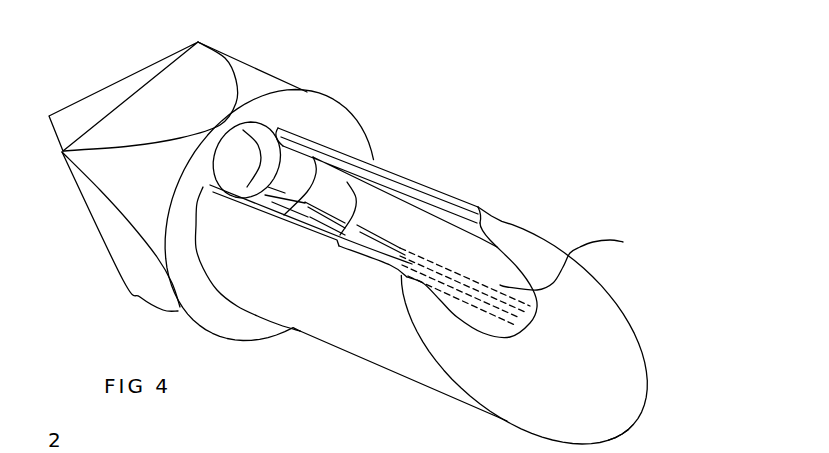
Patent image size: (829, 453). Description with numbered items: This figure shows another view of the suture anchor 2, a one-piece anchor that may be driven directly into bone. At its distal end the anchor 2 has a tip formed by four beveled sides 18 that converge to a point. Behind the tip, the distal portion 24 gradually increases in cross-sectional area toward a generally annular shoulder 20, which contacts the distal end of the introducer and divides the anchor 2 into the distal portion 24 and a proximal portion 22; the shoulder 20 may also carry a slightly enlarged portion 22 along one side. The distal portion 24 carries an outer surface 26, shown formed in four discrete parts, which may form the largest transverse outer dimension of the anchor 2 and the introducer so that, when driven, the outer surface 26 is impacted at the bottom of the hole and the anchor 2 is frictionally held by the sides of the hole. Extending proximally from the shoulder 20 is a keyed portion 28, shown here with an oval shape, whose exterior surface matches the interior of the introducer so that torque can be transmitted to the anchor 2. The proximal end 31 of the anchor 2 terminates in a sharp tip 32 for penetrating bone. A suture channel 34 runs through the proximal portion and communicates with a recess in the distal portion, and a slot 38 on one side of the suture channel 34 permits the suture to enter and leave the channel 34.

The suture anchor 2 is at (460, 144).
The beveled sides 18 is at (107, 100).
The shoulder 20 is at (338, 127).
The proximal portion 22 is at (337, 337).
The distal portion 24 is at (243, 65).
The outer surface 26 is at (112, 185).
The keyed portion 28 is at (483, 207).
The proximal end 31 is at (635, 400).
The sharp tip 32 is at (623, 433).
The suture channel 34 is at (577, 261).
The slot 38 is at (427, 233).